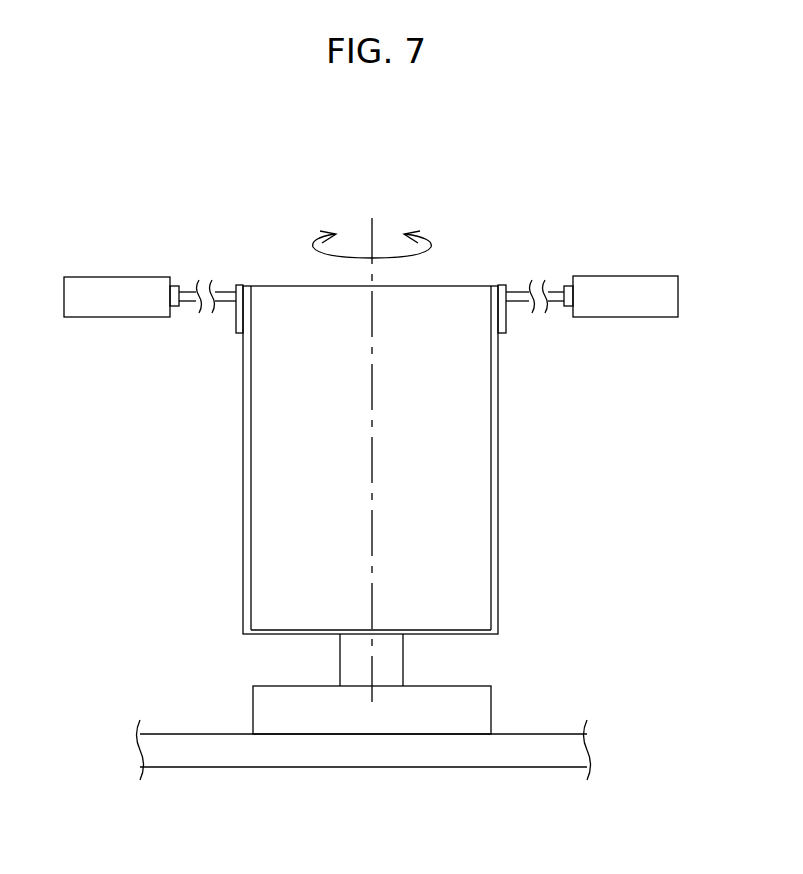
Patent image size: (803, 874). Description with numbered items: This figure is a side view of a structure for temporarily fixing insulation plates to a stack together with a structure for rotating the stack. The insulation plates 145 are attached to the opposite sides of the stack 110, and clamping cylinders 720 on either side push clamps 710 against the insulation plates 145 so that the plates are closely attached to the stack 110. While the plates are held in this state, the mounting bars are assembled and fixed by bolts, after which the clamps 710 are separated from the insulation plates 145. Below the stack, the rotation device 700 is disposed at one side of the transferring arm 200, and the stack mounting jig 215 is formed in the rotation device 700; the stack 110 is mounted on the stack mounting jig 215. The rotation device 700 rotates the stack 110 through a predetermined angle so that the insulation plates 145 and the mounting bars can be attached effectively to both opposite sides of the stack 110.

The stack 110 is at (325, 404).
The insulation plates 145 is at (498, 455).
The transferring arm 200 is at (215, 750).
The stack mounting jig 215 is at (388, 662).
The rotation device 700 is at (432, 710).
The clamps 710 is at (505, 320).
The clamping cylinders 720 is at (627, 288).